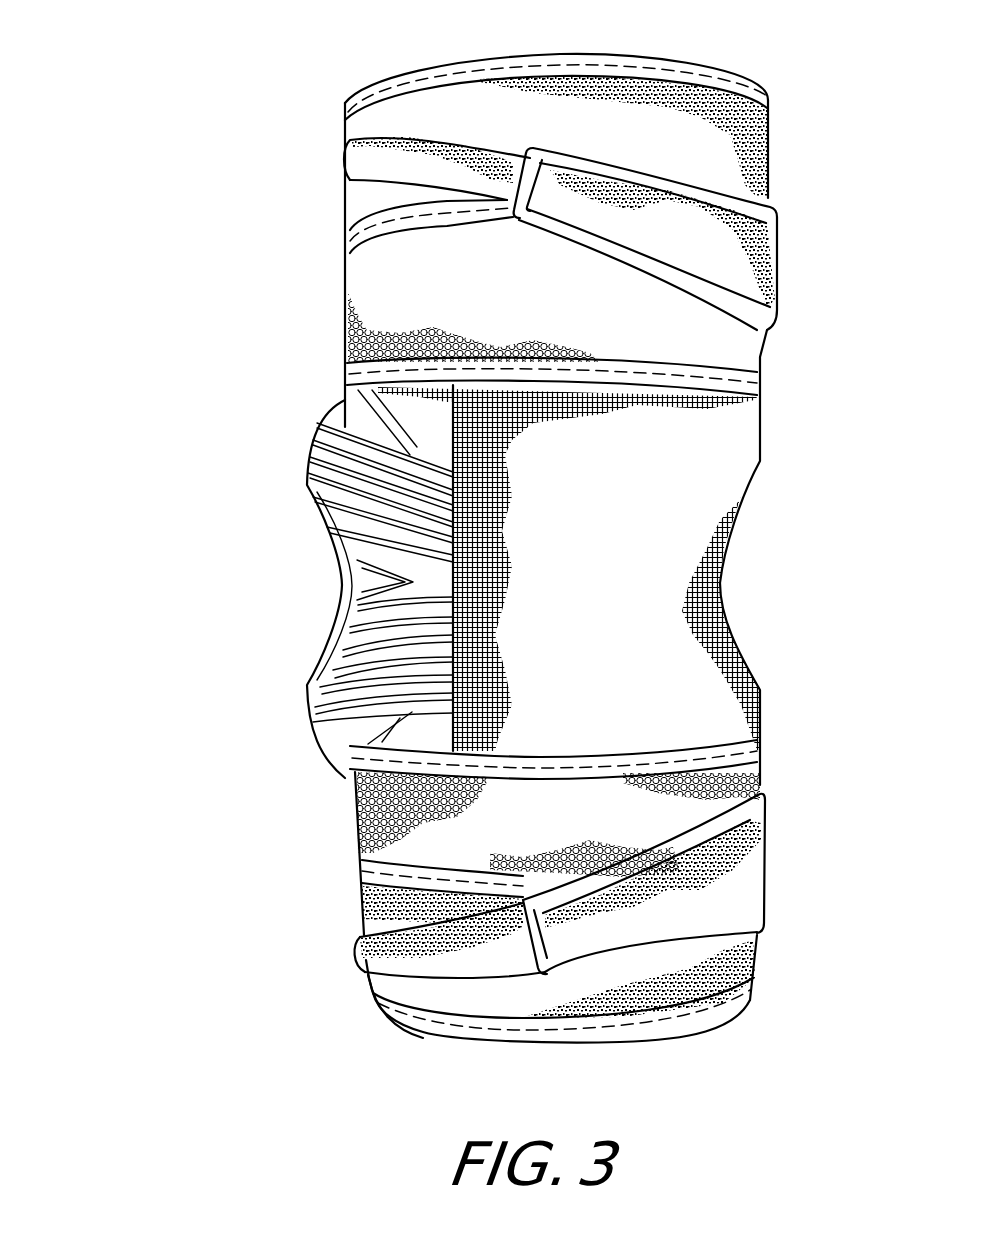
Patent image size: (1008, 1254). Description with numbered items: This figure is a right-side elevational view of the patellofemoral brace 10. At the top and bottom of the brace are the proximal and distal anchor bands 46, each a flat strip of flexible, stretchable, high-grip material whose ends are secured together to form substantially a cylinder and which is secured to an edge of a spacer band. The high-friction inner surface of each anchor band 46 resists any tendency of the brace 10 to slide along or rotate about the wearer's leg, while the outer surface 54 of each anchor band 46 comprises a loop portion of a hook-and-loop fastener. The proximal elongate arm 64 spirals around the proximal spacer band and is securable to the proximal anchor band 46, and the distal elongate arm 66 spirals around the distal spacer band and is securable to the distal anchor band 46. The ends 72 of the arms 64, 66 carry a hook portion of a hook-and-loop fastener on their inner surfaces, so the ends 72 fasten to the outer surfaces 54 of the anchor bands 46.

The brace 10 is at (205, 79).
The anchor band 46 is at (378, 115).
The outer surface of anchor band 54 is at (770, 124).
The proximal elongate arm 64 is at (773, 240).
The distal elongate arm 66 is at (752, 883).
The end of arm 72 is at (362, 180).